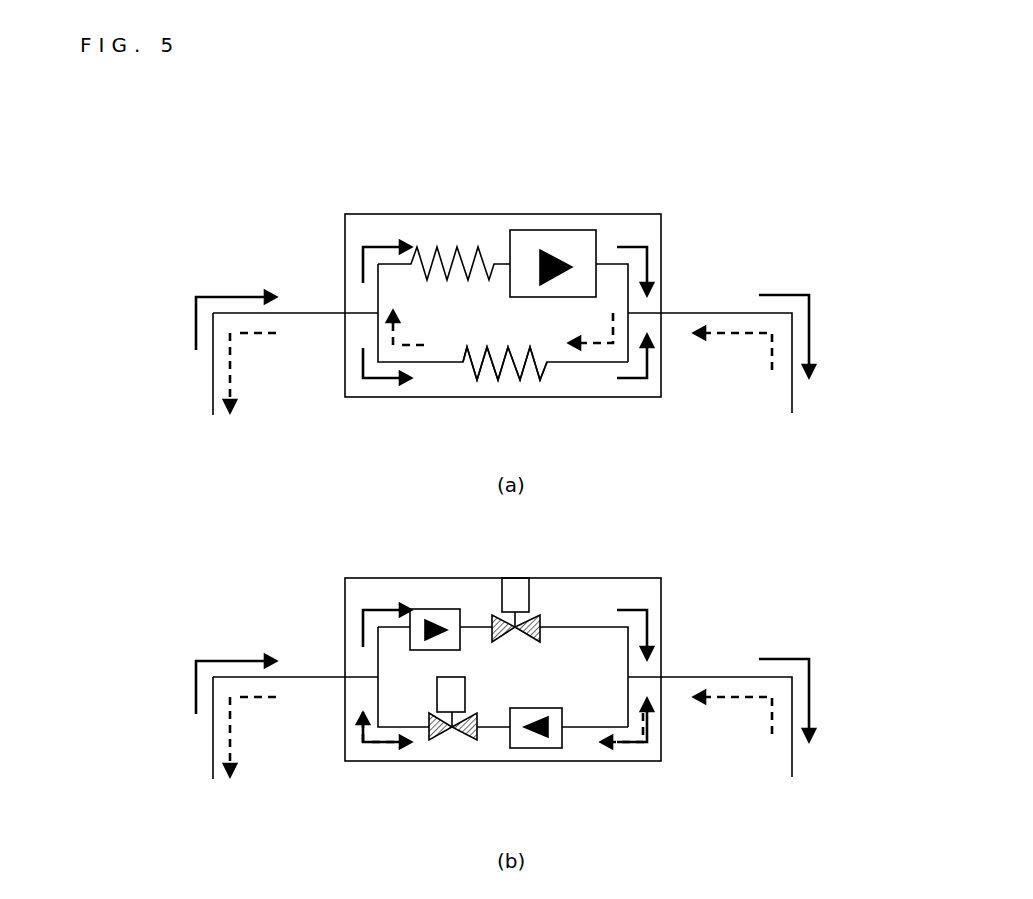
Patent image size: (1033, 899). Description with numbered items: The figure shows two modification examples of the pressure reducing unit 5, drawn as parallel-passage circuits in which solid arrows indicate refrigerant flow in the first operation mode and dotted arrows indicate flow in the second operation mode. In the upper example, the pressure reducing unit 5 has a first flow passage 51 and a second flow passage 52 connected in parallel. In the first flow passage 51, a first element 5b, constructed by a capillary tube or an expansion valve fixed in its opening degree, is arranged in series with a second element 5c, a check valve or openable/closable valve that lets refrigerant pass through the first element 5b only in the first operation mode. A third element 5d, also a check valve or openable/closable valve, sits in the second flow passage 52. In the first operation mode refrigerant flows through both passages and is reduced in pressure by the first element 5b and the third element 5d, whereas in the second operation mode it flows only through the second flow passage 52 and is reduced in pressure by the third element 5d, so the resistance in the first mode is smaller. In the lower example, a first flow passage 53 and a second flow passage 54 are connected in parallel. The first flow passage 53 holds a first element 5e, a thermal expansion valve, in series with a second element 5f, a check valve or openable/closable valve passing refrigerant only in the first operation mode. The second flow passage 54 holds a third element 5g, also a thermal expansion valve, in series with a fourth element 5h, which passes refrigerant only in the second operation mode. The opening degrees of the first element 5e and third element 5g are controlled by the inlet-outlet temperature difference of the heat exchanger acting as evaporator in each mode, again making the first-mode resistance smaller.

The pressure reducing unit 5 is at (661, 270).
The first element 5b is at (437, 252).
The second element 5c is at (567, 235).
The third element 5d is at (473, 378).
The first flow passage 51 is at (602, 263).
The second flow passage 52 is at (570, 362).
The first element 5e is at (530, 580).
The second element 5f is at (415, 608).
The third element 5g is at (430, 742).
The fourth element 5h is at (525, 747).
The first flow passage 53 is at (585, 627).
The second flow passage 54 is at (580, 728).